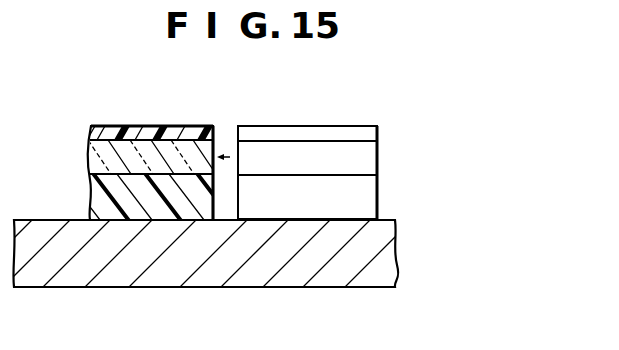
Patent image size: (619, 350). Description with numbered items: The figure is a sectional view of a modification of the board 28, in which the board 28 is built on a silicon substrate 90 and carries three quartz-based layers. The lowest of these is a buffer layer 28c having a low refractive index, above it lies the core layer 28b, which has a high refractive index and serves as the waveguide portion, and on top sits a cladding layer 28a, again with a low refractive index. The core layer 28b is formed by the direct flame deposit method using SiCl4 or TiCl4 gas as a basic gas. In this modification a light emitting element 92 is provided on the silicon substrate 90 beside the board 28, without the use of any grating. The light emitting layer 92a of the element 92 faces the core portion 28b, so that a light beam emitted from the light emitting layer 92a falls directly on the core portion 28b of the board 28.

The board 28 is at (182, 123).
The cladding layer 28a is at (133, 127).
The core layer 28b is at (105, 153).
The buffer layer 28c is at (91, 195).
The silicon substrate 90 is at (111, 277).
The light emitting element 92 is at (342, 125).
The light emitting layer 92a is at (287, 130).